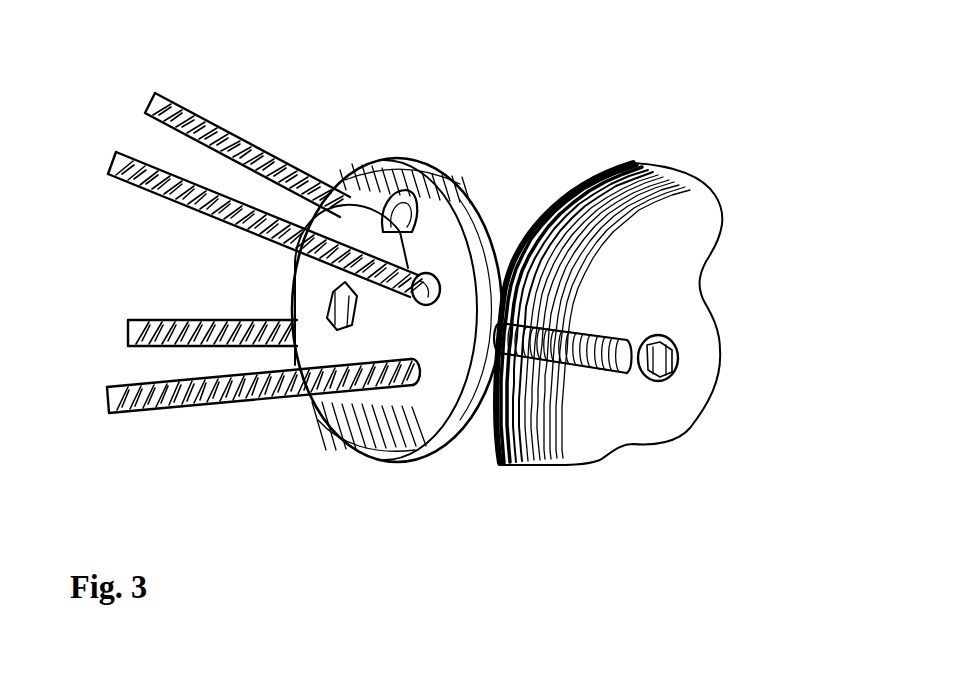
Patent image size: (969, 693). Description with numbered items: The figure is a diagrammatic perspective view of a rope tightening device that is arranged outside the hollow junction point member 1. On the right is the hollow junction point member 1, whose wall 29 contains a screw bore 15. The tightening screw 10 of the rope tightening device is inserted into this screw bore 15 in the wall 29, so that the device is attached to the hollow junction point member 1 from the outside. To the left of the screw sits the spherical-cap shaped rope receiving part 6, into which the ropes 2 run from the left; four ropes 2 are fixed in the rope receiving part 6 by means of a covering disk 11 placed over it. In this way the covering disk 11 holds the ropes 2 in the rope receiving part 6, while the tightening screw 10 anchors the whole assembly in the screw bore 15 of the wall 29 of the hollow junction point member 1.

The hollow junction point member 1 is at (680, 173).
The ropes 2 is at (142, 180).
The rope receiving part 6 is at (460, 178).
The tightening screw 10 is at (620, 372).
The covering disk 11 is at (383, 323).
The screw bore 15 is at (680, 356).
The wall 29 is at (703, 372).